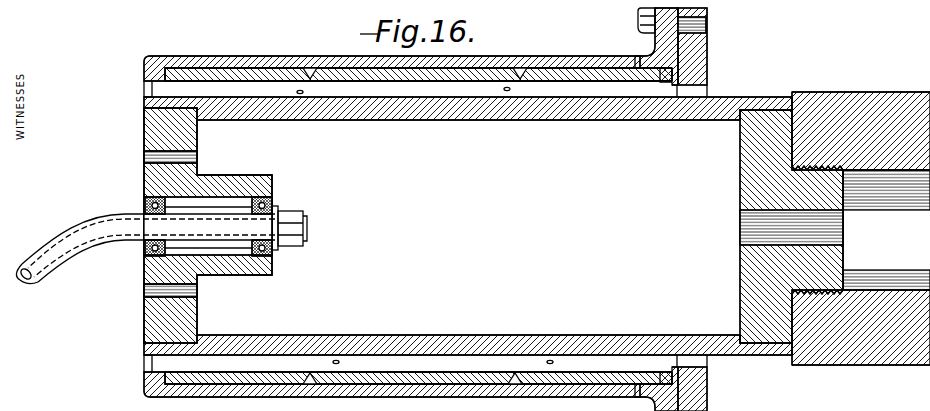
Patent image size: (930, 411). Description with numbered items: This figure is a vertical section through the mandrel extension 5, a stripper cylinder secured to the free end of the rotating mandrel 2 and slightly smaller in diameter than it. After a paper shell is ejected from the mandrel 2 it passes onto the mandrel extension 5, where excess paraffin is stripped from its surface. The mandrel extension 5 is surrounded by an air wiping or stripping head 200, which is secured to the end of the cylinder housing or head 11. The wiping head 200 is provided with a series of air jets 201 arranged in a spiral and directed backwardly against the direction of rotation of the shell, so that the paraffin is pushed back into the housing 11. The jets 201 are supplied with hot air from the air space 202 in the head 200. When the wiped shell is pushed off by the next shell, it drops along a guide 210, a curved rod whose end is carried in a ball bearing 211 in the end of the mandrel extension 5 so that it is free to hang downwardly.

The mandrel 2 is at (926, 358).
The mandrel extension 5 is at (725, 104).
The cylinder housing or head 11 is at (708, 46).
The air wiping or stripping head 200 is at (337, 78).
The air jets 201 is at (522, 78).
The air space 202 is at (262, 70).
The guide 210 is at (86, 240).
The ball bearing 211 is at (146, 205).